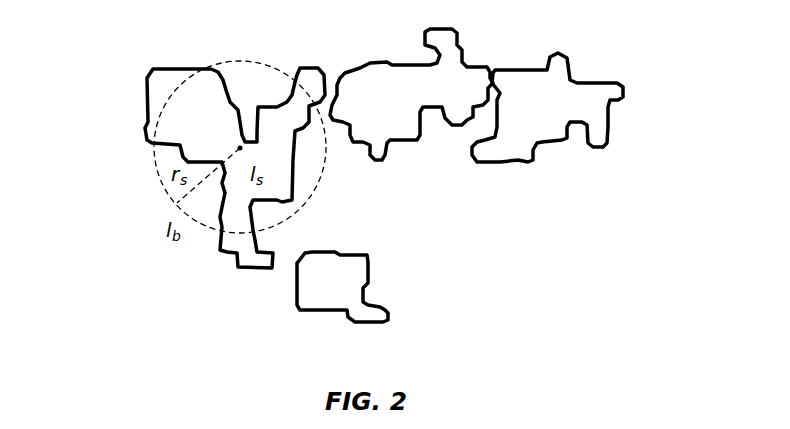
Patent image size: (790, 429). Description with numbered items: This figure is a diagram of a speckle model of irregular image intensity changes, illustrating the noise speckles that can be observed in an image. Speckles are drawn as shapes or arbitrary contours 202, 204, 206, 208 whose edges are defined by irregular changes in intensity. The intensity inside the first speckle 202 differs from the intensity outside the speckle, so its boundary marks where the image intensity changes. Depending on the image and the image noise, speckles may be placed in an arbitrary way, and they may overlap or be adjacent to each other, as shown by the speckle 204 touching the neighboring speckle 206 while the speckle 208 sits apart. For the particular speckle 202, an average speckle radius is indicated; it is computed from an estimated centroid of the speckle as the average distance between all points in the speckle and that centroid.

The first speckle 202 is at (147, 89).
The speckle 204 is at (407, 145).
The speckle 206 is at (610, 112).
The speckle 208 is at (372, 263).